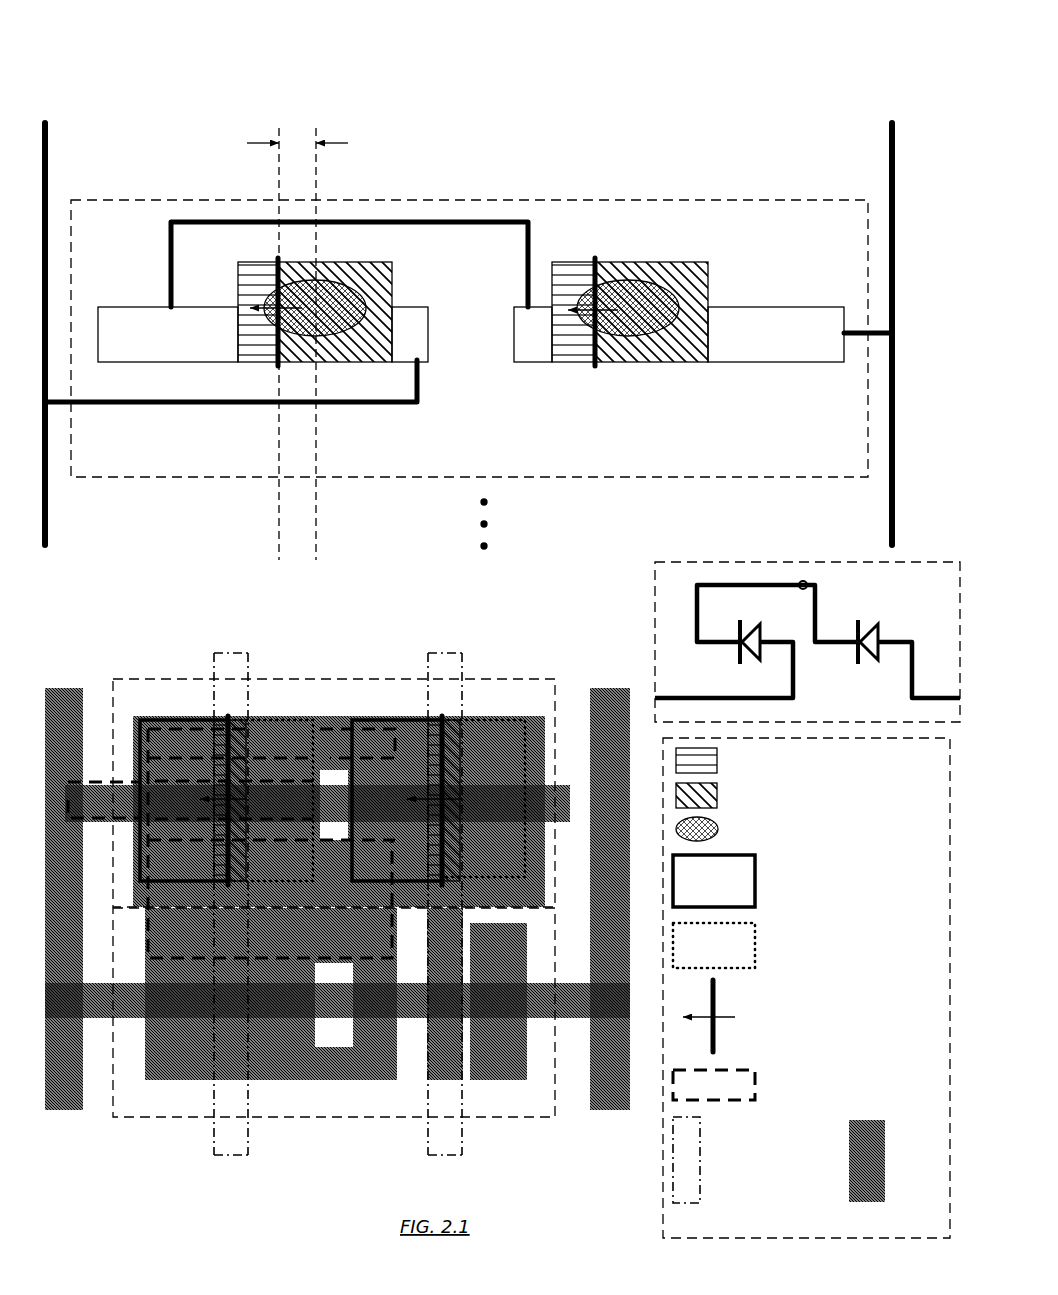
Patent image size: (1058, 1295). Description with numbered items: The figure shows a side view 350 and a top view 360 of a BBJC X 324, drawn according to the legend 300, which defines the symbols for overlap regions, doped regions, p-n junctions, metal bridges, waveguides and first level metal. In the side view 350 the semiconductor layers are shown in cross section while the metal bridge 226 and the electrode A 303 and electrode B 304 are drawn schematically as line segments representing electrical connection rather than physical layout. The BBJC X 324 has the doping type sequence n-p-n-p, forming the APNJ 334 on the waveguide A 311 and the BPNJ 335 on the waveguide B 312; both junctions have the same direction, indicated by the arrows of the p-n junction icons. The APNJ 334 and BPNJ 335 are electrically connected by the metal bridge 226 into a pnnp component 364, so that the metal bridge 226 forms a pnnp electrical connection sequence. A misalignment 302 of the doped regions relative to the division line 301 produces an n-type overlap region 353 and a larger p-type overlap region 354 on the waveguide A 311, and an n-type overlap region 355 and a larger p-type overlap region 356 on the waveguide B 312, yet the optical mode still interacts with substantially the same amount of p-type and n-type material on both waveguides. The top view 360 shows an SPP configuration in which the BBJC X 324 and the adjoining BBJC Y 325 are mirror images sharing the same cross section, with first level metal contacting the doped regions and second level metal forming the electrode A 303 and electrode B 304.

The legend 300 is at (806, 988).
The division line 301 is at (317, 118).
The misalignment 302 is at (297, 126).
The electrode A 303 is at (68, 685).
The electrode B 304 is at (890, 160).
The waveguide A 311 is at (362, 227).
The waveguide B 312 is at (610, 227).
The BBJC X 324 is at (469, 553).
The BBJC Y 325 is at (334, 1012).
The APNJ 334 is at (273, 365).
The BPNJ 335 is at (597, 365).
The side view 350 is at (667, 80).
The n-type overlap region 353 is at (258, 312).
The p-type overlap region 354 is at (335, 312).
The n-type overlap region 355 is at (573, 312).
The p-type overlap region 356 is at (651, 312).
The top view 360 is at (315, 1163).
The pnnp component 364 is at (807, 642).
The metal bridge 226 is at (405, 237).